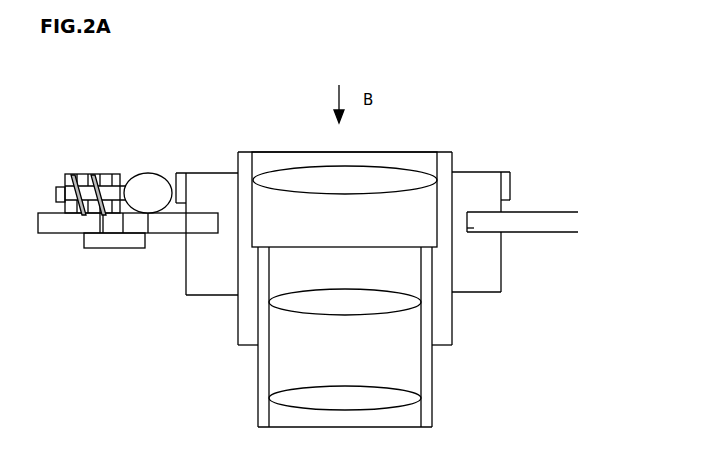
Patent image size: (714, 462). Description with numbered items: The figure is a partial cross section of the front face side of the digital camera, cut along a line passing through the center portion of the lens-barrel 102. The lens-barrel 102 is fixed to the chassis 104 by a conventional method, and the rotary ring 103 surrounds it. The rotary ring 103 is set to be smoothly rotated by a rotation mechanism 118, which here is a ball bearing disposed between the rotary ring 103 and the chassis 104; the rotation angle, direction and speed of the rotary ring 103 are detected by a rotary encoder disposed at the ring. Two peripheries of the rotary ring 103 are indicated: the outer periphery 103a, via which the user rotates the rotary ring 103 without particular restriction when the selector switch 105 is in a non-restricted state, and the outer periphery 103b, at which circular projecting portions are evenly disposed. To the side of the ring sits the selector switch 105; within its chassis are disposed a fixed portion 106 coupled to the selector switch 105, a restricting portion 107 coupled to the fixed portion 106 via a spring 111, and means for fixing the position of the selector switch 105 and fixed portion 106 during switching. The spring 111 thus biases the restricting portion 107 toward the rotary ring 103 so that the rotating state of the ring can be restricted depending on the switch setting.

The lens-barrel 102 is at (427, 395).
The rotary ring 103 is at (221, 252).
The outer periphery 103a is at (190, 295).
The outer periphery 103b is at (510, 174).
The chassis 104 is at (572, 218).
The selector switch 105 is at (97, 246).
The fixed portion 106 is at (65, 176).
The restricting portion 107 is at (148, 174).
The spring 111 is at (98, 176).
The rotation mechanism 118 is at (472, 228).